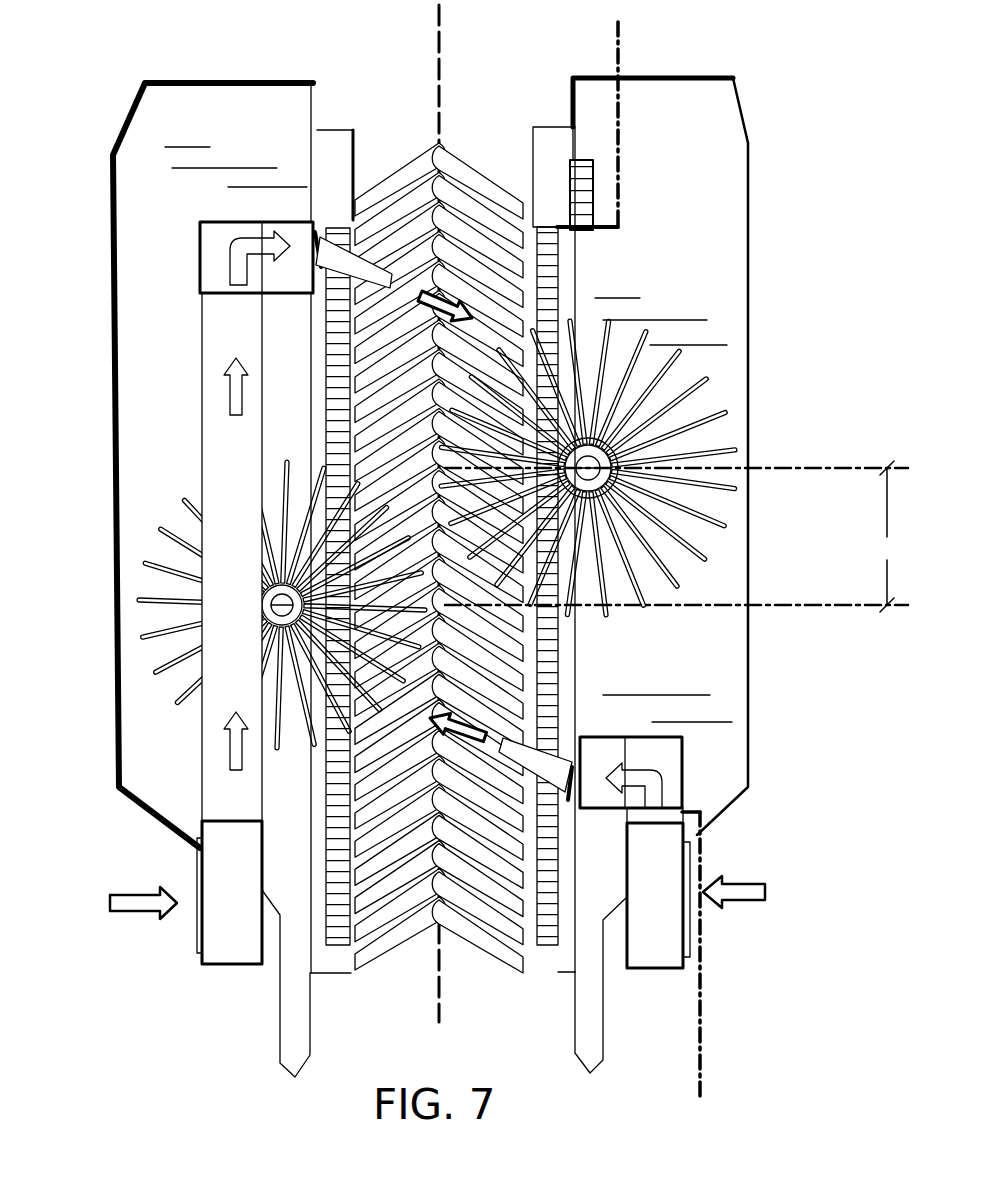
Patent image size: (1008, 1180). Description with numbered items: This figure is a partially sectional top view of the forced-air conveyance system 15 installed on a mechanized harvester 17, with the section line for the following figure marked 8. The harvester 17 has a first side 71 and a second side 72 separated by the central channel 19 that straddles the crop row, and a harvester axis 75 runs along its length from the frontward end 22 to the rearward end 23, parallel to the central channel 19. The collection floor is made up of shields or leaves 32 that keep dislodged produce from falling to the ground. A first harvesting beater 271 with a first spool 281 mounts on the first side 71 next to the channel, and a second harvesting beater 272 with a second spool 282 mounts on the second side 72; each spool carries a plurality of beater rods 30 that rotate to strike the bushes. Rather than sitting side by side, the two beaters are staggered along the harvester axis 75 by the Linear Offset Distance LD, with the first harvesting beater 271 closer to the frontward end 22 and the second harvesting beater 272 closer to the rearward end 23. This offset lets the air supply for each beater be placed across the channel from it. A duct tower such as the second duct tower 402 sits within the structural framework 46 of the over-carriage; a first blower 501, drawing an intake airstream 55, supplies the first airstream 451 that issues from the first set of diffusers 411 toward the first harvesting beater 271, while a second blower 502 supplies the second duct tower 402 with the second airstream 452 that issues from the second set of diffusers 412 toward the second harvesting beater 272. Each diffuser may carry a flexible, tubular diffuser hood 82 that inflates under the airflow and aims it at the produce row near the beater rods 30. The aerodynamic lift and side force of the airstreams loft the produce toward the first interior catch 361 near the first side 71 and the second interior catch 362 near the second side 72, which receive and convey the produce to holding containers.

The forced-air conveyance system 15 is at (93, 362).
The mechanized harvester 17 is at (287, 37).
The central channel 19 is at (430, 936).
The frontward end 22 is at (588, 960).
The rearward end 23 is at (720, 113).
The beater rods 30 is at (667, 540).
The shields or leaves 32 is at (482, 195).
The structural framework 46 is at (170, 478).
The intake airstream 55 is at (147, 908).
The first side 71 is at (143, 432).
The second side 72 is at (730, 362).
The harvester axis 75 is at (439, 98).
The diffuser hood 82 is at (363, 265).
The first harvesting beater 271 is at (200, 557).
The second harvesting beater 272 is at (653, 588).
The first spool 281 is at (265, 626).
The second spool 282 is at (615, 470).
The first interior catch 361 is at (347, 930).
The second interior catch 362 is at (533, 230).
The second duct tower 402 is at (265, 280).
The first set of diffusers 411 is at (556, 790).
The second set of diffusers 412 is at (322, 240).
The first airstream 451 is at (470, 722).
The second airstream 452 is at (463, 308).
The first blower 501 is at (680, 942).
The second blower 502 is at (207, 845).
The section line 8- 8 is at (590, 25).
The Linear Offset Distance LD is at (676, 536).